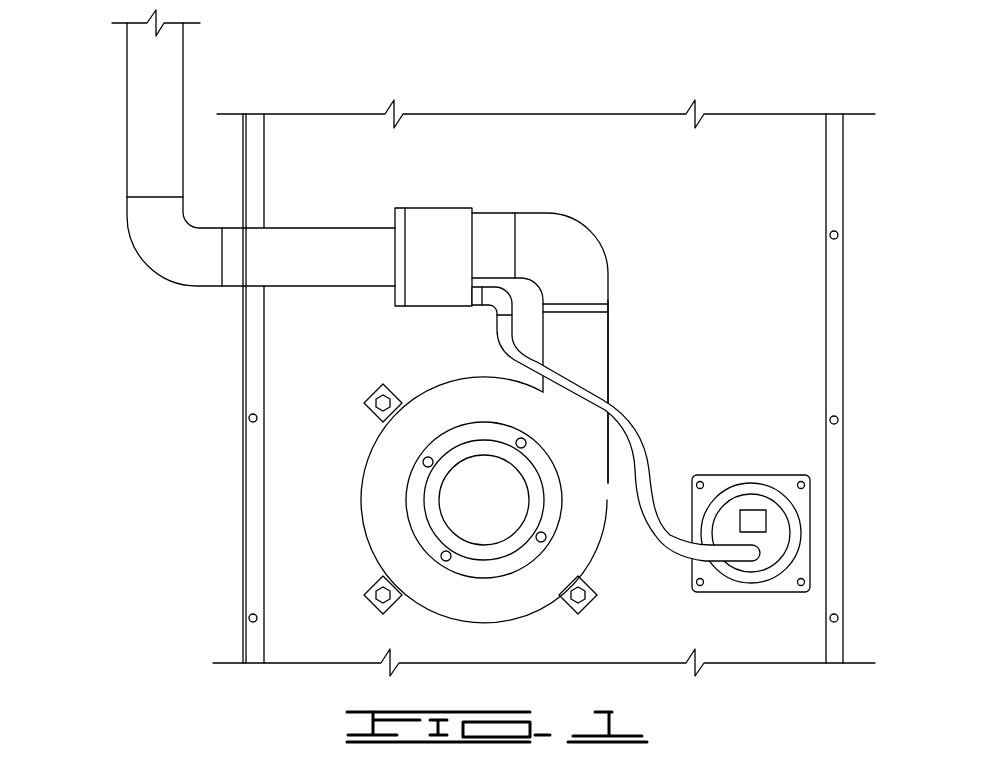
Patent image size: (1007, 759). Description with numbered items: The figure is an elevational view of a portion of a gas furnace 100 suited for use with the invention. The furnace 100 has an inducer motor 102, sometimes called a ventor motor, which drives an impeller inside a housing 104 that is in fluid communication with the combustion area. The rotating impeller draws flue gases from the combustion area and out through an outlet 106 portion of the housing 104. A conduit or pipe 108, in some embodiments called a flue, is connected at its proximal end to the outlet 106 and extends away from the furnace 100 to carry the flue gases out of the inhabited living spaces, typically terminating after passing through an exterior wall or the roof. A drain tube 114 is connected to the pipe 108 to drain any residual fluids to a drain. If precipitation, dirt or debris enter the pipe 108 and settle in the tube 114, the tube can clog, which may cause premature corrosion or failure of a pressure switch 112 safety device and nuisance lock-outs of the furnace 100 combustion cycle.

The gas furnace 100 is at (734, 166).
The inducer motor 102 is at (445, 492).
The housing 104 is at (377, 543).
The outlet 106 is at (608, 335).
The pipe 108 is at (127, 83).
The pressure switch 112 is at (780, 533).
The drain tube 114 is at (637, 423).